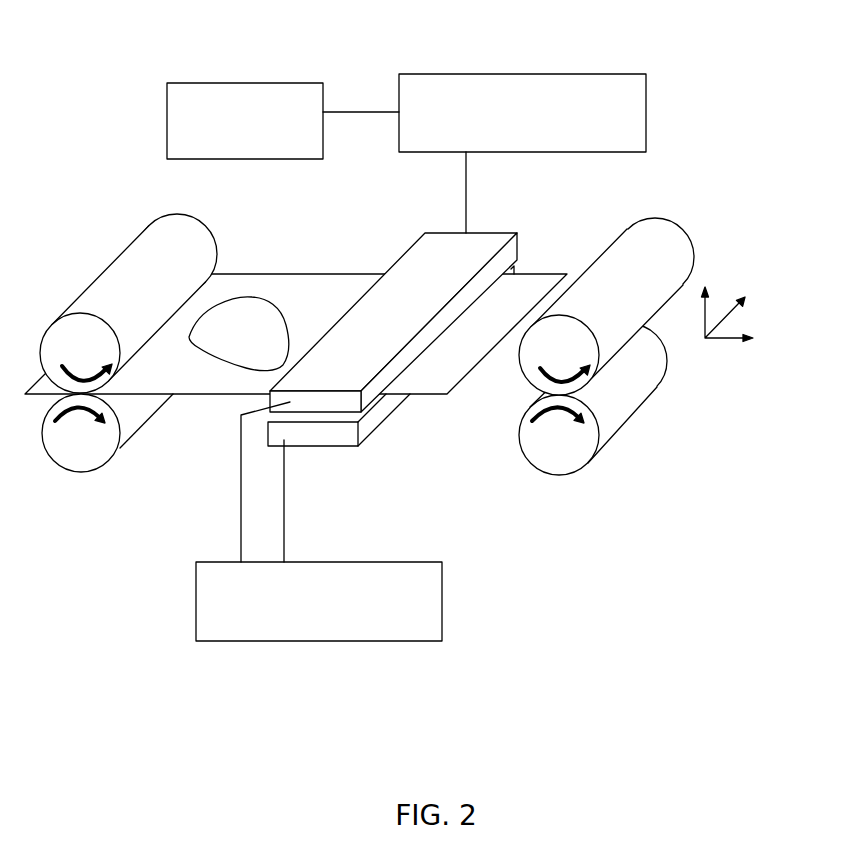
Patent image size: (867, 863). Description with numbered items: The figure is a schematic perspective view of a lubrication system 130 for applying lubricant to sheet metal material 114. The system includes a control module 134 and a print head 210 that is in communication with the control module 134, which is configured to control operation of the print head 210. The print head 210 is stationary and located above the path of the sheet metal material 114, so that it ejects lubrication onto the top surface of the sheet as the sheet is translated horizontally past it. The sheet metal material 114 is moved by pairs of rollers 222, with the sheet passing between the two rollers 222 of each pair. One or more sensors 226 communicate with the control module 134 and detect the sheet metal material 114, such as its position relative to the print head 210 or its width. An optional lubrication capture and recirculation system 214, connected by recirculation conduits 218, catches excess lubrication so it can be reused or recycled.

The sheet metal material 114 is at (435, 383).
The lubrication system 130 is at (707, 123).
The control module 134 is at (540, 73).
The print head 210 is at (518, 231).
The lubrication capture and recirculation system 214 is at (443, 602).
The recirculation conduits 218 is at (241, 522).
The rollers 222 is at (130, 263).
The sensors 226 is at (230, 82).